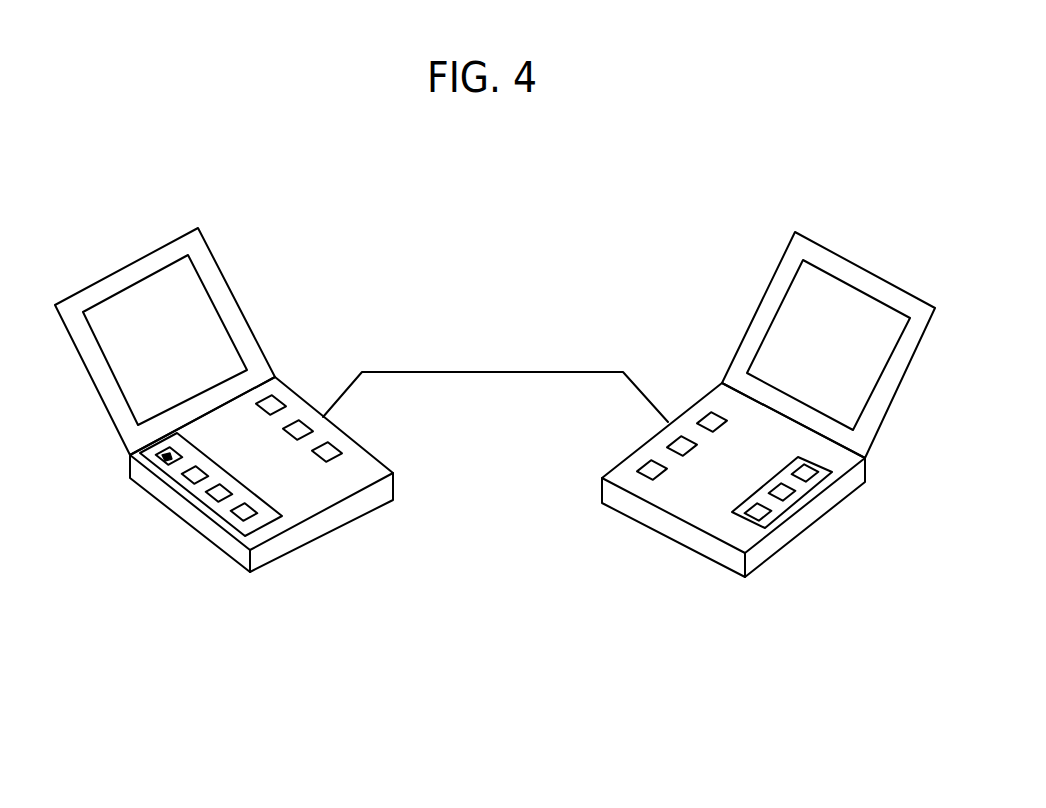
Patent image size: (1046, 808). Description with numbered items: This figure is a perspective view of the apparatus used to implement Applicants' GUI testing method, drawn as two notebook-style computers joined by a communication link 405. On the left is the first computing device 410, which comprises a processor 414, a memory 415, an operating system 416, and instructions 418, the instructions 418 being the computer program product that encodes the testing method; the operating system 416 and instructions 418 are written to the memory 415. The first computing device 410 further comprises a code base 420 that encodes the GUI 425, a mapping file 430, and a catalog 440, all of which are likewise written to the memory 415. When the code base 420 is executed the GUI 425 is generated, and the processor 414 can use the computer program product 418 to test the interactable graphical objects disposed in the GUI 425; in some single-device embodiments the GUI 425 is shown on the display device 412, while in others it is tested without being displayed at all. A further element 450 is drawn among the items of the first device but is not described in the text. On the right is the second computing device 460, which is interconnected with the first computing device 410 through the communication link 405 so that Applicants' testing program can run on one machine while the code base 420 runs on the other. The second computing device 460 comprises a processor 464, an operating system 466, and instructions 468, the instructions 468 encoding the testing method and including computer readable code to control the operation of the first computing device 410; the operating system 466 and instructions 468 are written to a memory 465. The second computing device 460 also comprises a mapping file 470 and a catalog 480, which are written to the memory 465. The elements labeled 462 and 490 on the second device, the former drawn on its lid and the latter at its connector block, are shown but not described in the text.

The communication link 405 is at (493, 372).
The computing device 410 is at (245, 595).
The display device 412 is at (180, 352).
The processor 414 is at (275, 402).
The memory 415 is at (270, 530).
The operating system 416 is at (303, 431).
The instructions 418 is at (333, 447).
The code base 420 is at (172, 461).
The GUI 425 is at (162, 456).
The mapping file 430 is at (196, 477).
The catalog 440 is at (220, 495).
The connector contact 450 is at (245, 514).
The computing device 460 is at (765, 592).
The display of second computer 462 is at (839, 350).
The processor 464 is at (708, 420).
The memory 465 is at (740, 528).
The operating system 466 is at (678, 447).
The instructions 468 is at (648, 471).
The mapping file 470 is at (806, 474).
The catalog 480 is at (783, 494).
The connector contact on second computer 490 is at (760, 514).